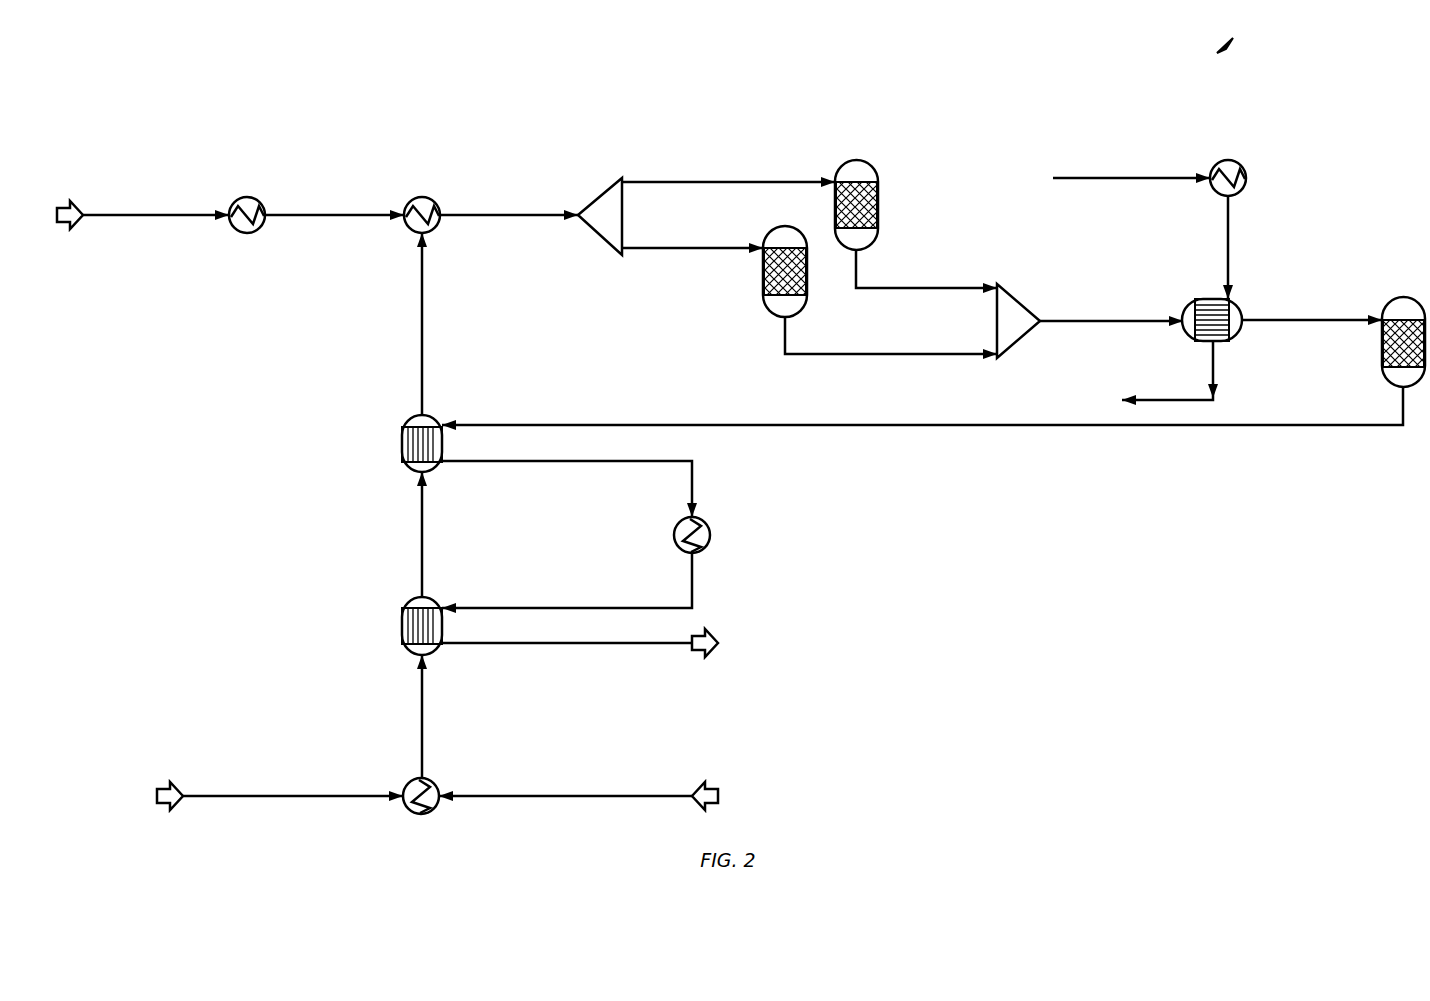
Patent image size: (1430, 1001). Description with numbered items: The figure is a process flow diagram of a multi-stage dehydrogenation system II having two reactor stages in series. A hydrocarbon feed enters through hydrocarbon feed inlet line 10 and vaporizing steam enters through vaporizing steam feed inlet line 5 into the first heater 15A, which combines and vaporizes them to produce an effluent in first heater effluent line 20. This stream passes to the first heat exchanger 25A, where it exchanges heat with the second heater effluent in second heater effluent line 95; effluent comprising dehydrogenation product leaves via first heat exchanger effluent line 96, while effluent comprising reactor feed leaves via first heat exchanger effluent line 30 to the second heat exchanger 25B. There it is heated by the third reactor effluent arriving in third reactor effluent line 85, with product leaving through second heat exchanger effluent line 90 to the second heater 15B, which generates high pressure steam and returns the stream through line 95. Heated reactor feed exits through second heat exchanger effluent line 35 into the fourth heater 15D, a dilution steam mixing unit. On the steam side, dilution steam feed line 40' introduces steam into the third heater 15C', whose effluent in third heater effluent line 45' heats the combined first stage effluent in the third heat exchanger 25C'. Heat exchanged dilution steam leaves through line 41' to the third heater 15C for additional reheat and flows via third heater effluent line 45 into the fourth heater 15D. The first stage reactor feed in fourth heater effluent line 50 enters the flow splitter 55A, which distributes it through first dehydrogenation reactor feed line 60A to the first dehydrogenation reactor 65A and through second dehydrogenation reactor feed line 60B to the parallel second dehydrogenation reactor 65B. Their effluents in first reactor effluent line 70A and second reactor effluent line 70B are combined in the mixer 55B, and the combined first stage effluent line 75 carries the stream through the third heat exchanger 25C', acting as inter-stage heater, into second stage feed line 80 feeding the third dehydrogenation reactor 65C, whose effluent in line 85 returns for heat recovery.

The multi-stage dehydrogenation system II is at (1233, 44).
The vaporizing steam feed inlet line 5 is at (560, 794).
The hydrocarbon feed inlet line 10 is at (290, 794).
The first heater 15A is at (421, 814).
The second heater 15B is at (712, 535).
The third heater 15C is at (246, 189).
The third heater 15C' is at (1230, 152).
The fourth heater 15D is at (422, 197).
The first heater effluent line 20 is at (424, 715).
The first heat exchanger 25A is at (400, 625).
The second heat exchanger 25B is at (400, 440).
The third heat exchanger 25C' is at (1212, 297).
The first heat exchanger effluent line 30 is at (424, 535).
The second heat exchanger effluent line 35 is at (424, 350).
The dilution steam feed line 40' is at (1131, 153).
The line 41' is at (637, 303).
The third heater effluent line 45 is at (334, 240).
The third heater effluent line 45' is at (1259, 247).
The fourth heater effluent line 50 is at (517, 218).
The flow splitter 55A is at (598, 190).
The mixer 55B is at (1018, 340).
The first dehydrogenation reactor feed line 60A is at (733, 180).
The second dehydrogenation reactor feed line 60B is at (692, 246).
The first dehydrogenation reactor 65A is at (880, 200).
The second dehydrogenation reactor 65B is at (760, 283).
The third dehydrogenation reactor 65C is at (1380, 352).
The first reactor effluent line 70A is at (935, 286).
The second reactor effluent line 70B is at (870, 352).
The combined first stage effluent line 75 is at (1110, 319).
The second stage feed line 80 is at (1316, 318).
The third reactor effluent line 85 is at (924, 423).
The second heat exchanger effluent line 90 is at (577, 463).
The second heater effluent line 95 is at (566, 606).
The first heat exchanger effluent line 96 is at (577, 645).